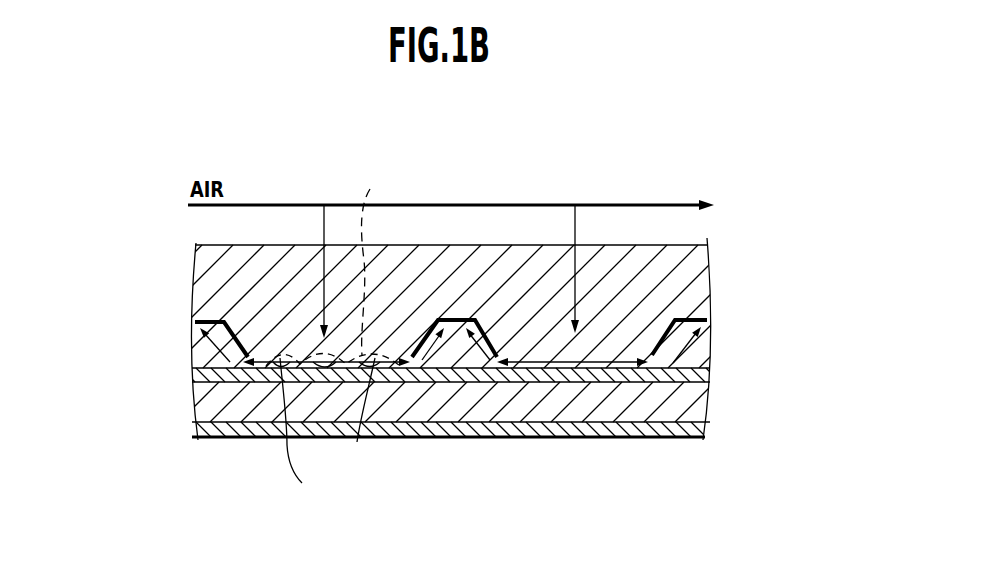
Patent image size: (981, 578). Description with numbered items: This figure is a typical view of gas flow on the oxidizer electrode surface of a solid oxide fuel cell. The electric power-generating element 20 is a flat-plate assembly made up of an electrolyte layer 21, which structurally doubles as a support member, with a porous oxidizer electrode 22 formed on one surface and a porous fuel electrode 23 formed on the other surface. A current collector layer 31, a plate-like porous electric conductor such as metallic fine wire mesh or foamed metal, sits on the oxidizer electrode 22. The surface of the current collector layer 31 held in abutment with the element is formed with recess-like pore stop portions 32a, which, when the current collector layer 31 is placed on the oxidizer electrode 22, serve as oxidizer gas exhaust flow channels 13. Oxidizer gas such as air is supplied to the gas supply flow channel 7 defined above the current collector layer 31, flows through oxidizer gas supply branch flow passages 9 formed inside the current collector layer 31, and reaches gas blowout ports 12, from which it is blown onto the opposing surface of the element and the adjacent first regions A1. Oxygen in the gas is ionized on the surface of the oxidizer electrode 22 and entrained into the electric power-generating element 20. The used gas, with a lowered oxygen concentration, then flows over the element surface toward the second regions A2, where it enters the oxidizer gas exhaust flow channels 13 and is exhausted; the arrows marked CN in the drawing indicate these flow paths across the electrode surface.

The current collector layer 31 is at (690, 283).
The oxidizer electrode 22 is at (705, 378).
The electrolyte layer 21 is at (697, 405).
The fuel electrode 23 is at (700, 435).
The electric power-generating element 20 is at (797, 355).
The oxidizer gas supply branch flow passage 9 is at (324, 266).
The gas supply flow channel 7 is at (575, 205).
The first region A1 is at (374, 253).
The recess-like pore stop portion 32a is at (465, 318).
The contact point CN is at (251, 341).
The gas blowout port 12 is at (337, 376).
The oxidizer gas exhaust flow channel 13 is at (460, 362).
The second region A2 is at (357, 442).